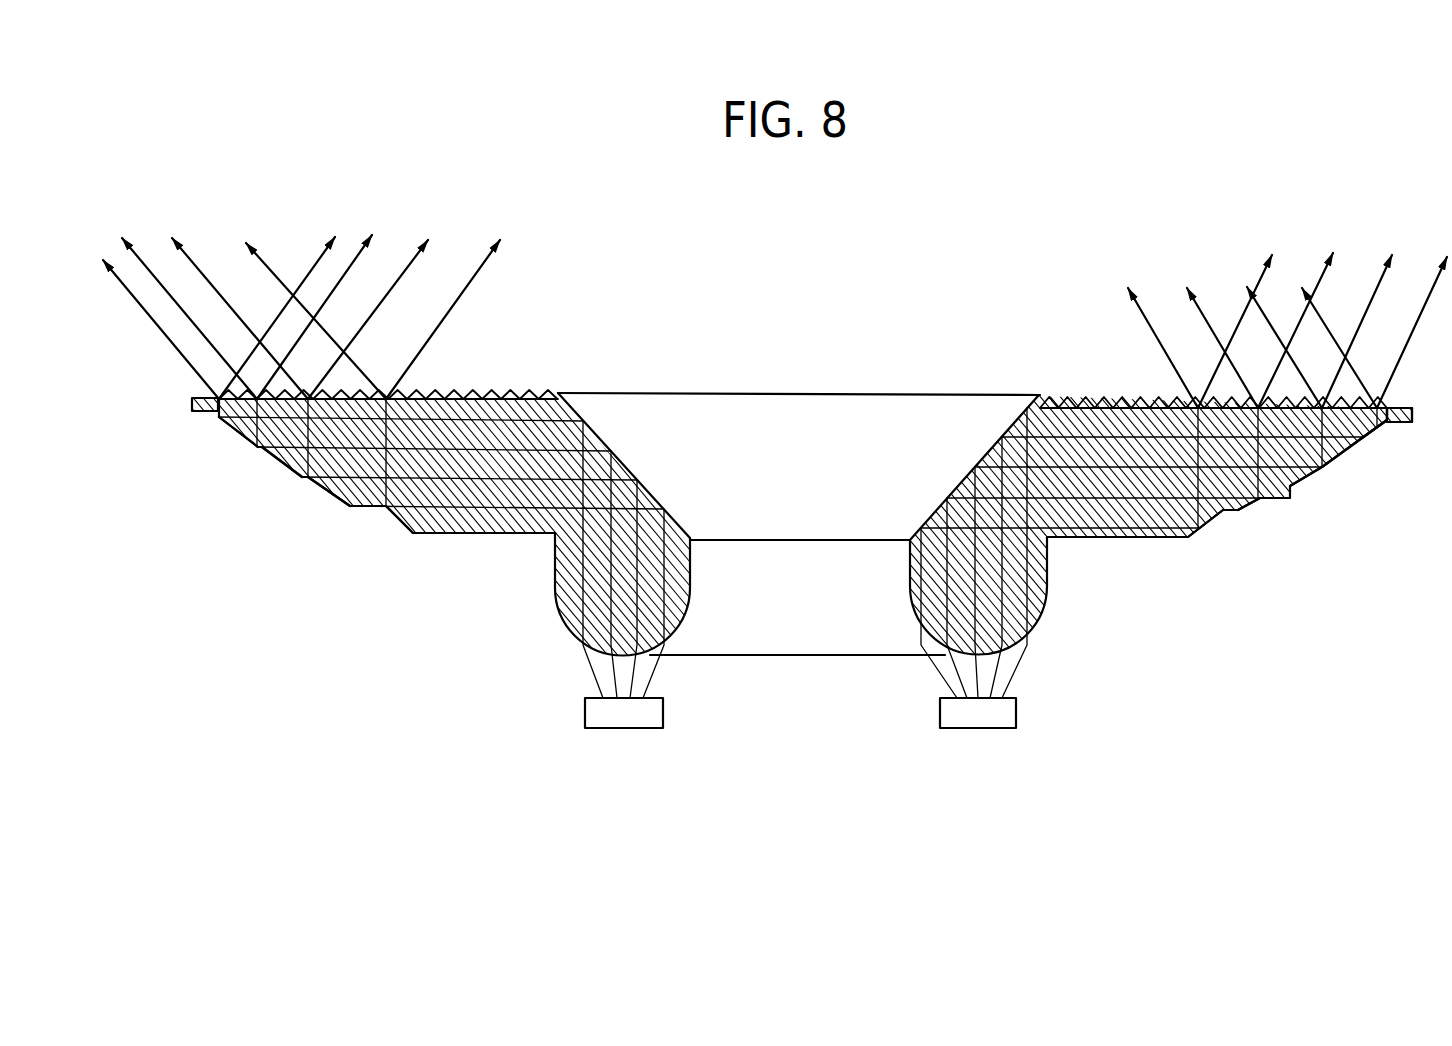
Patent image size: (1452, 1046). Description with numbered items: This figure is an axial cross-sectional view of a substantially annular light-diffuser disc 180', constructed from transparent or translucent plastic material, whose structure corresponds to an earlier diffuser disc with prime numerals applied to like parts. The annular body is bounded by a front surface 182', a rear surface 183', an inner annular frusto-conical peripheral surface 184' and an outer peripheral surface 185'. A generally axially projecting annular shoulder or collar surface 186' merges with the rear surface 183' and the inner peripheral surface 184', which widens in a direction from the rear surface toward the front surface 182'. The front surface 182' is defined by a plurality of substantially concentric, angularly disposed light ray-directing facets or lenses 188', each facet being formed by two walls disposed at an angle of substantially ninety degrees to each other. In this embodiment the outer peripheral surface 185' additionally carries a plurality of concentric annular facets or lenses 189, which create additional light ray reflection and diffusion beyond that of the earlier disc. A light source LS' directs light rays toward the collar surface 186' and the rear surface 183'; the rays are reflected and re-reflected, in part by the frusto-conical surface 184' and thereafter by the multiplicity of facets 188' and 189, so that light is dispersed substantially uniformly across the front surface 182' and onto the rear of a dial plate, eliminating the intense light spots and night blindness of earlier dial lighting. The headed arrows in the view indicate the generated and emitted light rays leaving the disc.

The light-diffuser disc 180' is at (726, 484).
The front surface 182' is at (427, 431).
The rear surface 183' is at (1166, 505).
The inner annular frusto-conical peripheral surface 184' is at (799, 466).
The outer peripheral surface 185' is at (1369, 457).
The annular shoulder surface or collar surface 186' is at (839, 553).
The concentric annular angularly disposed facets or lens 188' is at (803, 361).
The concentric annular facets or lenses 189 is at (242, 495).
The light source LS' is at (802, 747).